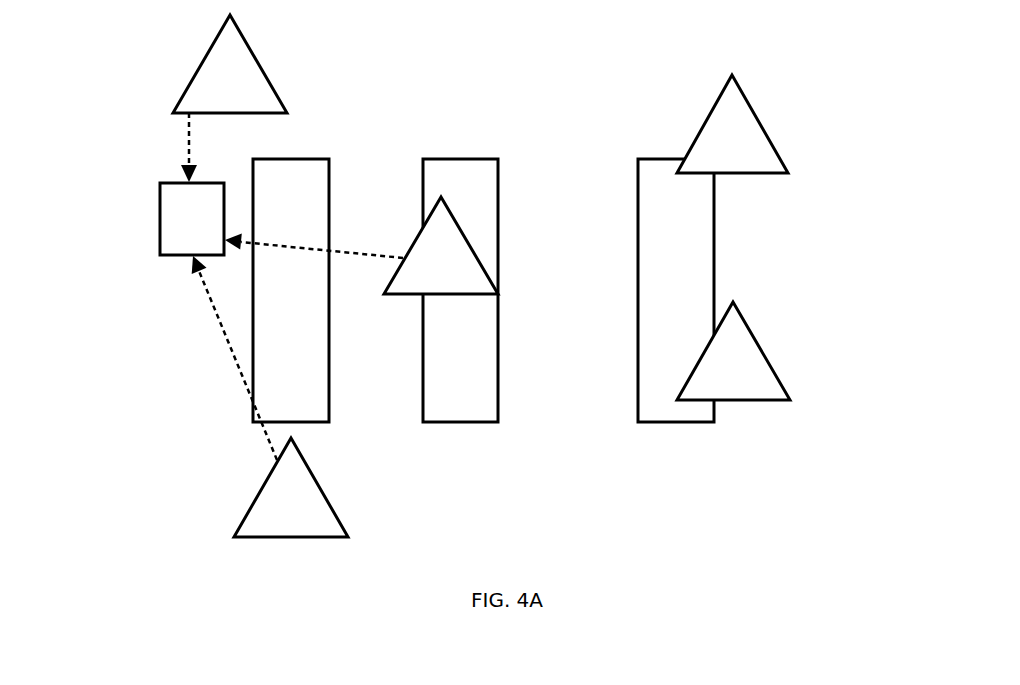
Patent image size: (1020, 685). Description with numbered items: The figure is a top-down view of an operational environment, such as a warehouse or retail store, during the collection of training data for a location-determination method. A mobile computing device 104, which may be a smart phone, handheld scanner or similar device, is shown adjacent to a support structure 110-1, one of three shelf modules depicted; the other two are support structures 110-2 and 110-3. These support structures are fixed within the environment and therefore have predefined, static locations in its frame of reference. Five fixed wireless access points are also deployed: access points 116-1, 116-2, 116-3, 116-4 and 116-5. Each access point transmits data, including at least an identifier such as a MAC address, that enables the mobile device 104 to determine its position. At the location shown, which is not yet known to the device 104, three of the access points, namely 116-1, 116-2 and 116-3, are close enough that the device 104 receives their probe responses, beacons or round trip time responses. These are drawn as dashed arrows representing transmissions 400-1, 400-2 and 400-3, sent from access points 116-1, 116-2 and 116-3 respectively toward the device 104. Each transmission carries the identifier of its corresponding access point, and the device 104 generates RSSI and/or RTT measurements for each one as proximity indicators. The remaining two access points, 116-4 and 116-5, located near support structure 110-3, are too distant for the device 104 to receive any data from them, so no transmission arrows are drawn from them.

The mobile computing device 104 is at (175, 231).
The support structure 110-1 is at (330, 350).
The support structure 110-2 is at (470, 158).
The support structure 110-3 is at (714, 265).
The access point 116-1 is at (280, 75).
The access point 116-2 is at (325, 492).
The access point 116-3 is at (477, 257).
The access point 116-4 is at (710, 107).
The access point 116-5 is at (690, 375).
The transmission 400-1 is at (187, 138).
The transmission 400-2 is at (233, 362).
The transmission 400-3 is at (368, 252).